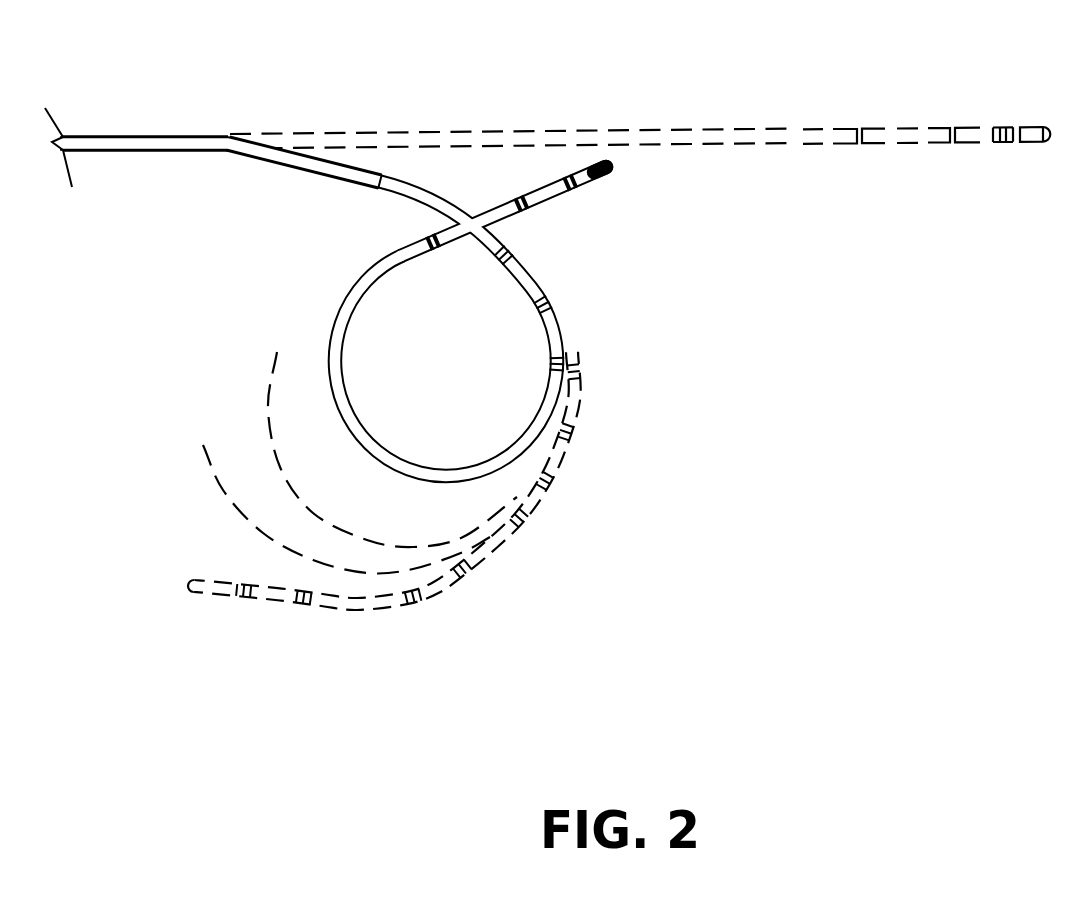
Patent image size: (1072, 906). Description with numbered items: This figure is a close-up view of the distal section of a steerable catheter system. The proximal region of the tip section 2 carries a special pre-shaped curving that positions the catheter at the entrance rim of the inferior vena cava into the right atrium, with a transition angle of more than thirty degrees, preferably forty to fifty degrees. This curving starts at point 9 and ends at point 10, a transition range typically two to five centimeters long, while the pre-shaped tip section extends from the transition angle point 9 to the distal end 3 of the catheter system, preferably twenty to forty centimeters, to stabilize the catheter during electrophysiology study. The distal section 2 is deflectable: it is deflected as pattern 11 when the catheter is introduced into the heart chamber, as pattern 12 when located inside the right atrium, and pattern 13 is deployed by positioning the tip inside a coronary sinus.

The tip section 2 is at (352, 249).
The distal end 3 is at (607, 156).
The transition angle point 9 is at (233, 126).
The end point of transition range 10 is at (384, 167).
The deflection pattern 11 is at (755, 116).
The deflection pattern 12 is at (402, 628).
The deflection pattern 13 is at (571, 206).